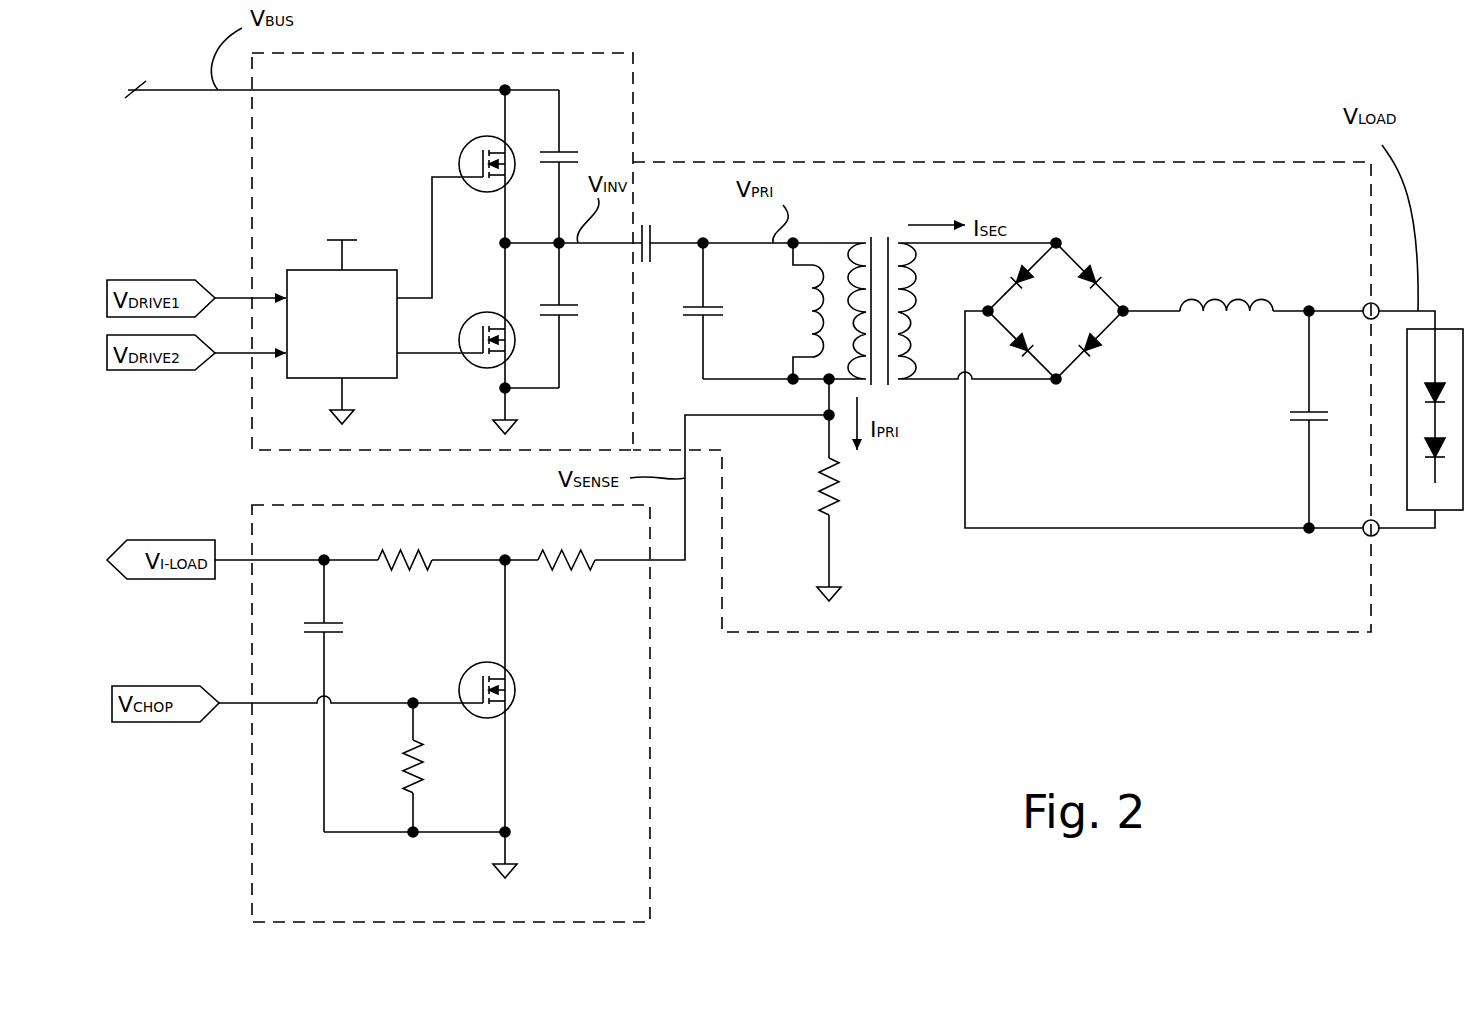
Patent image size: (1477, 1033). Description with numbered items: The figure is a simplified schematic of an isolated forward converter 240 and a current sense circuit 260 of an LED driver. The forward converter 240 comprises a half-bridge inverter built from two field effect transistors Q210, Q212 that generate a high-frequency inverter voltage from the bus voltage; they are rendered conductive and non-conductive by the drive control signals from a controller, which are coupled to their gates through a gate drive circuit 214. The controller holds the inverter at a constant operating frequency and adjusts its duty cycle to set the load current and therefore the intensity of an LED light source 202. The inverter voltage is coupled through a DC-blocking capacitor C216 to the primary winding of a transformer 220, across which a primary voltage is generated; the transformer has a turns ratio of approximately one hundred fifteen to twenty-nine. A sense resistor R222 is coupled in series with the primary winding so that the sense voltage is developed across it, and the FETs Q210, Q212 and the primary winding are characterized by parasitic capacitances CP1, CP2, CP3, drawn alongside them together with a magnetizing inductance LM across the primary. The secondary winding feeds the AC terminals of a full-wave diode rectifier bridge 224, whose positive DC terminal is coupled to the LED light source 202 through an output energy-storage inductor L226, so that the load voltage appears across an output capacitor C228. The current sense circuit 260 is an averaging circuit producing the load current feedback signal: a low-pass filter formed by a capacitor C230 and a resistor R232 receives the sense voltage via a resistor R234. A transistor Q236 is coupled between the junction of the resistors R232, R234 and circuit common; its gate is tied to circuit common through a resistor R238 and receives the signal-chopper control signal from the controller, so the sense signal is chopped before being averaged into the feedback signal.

The LED light source 202 is at (1448, 492).
The gate drive circuit 214 is at (368, 282).
The transformer 220 is at (880, 232).
The full-wave diode rectifier bridge 224 is at (1046, 400).
The forward converter 240 is at (633, 88).
The current sense circuit 260 is at (650, 757).
The field effect transistor Q210 is at (463, 152).
The field effect transistor Q212 is at (478, 366).
The transistor Q236 is at (515, 690).
The DC-blocking capacitor C216 is at (652, 238).
The output capacitor C228 is at (1300, 424).
The capacitor C230 is at (332, 636).
The output energy-storage inductor L226 is at (1219, 325).
The sense resistor R222 is at (838, 490).
The resistor R232 is at (400, 572).
The resistor R234 is at (568, 575).
The resistor R238 is at (408, 768).
The parasitic capacitance CP1 is at (580, 152).
The parasitic capacitance CP2 is at (570, 316).
The parasitic capacitance CP3 is at (702, 316).
The magnetizing inductance LM is at (793, 297).